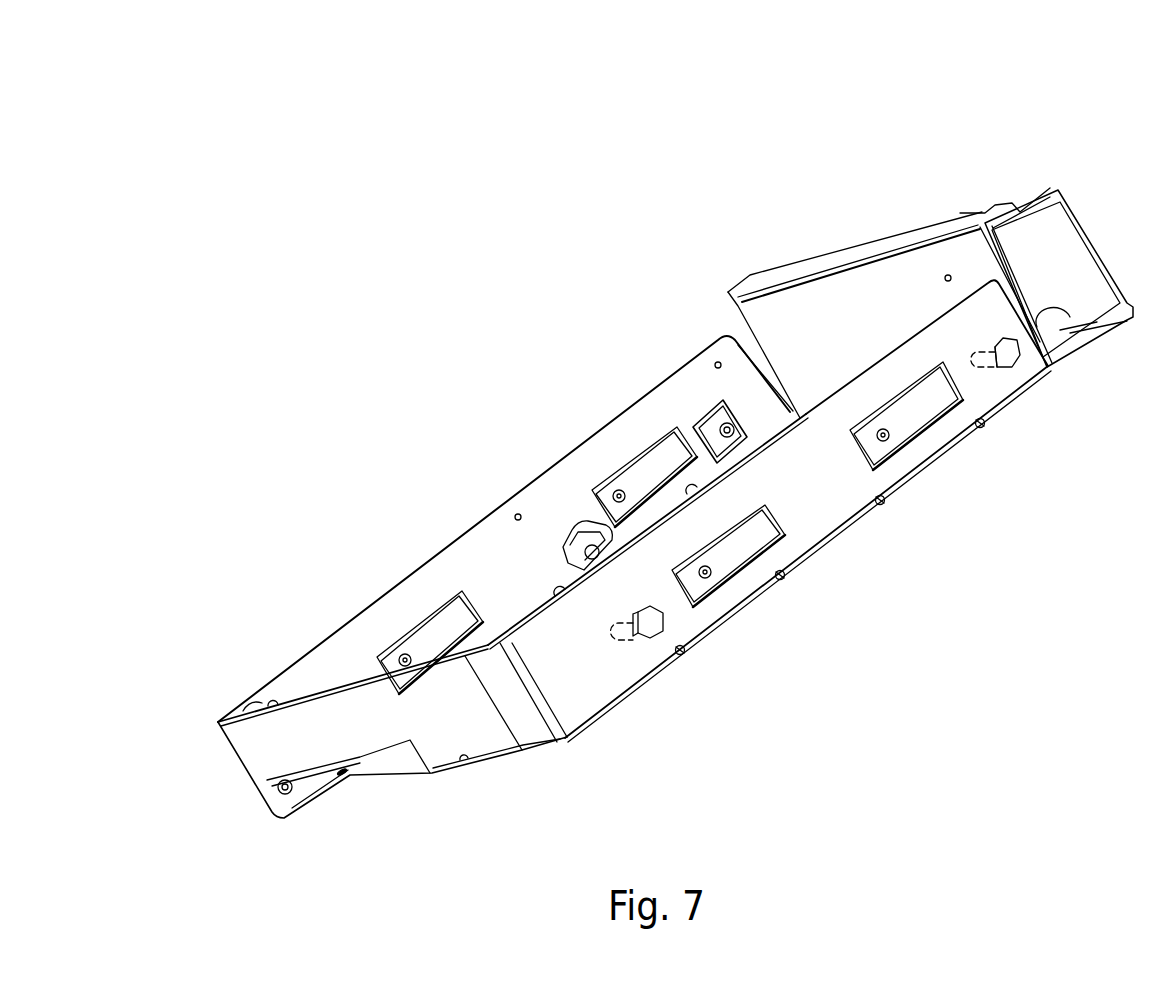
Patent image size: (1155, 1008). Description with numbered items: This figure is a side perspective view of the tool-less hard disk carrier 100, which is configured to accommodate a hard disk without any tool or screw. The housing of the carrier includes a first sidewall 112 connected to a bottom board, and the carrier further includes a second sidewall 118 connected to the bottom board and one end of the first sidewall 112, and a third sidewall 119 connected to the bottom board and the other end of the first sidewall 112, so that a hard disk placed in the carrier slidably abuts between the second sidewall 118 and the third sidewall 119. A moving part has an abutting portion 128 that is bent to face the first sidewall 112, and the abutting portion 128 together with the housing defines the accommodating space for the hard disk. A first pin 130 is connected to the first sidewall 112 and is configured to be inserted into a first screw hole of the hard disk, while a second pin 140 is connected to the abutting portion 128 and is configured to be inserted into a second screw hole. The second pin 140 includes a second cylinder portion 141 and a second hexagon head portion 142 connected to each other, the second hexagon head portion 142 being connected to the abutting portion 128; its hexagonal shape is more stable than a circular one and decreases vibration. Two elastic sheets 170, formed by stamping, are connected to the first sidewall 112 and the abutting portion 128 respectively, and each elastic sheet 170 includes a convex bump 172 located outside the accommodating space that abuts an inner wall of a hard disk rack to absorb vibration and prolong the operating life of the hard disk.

The tool-less hard disk carrier 100 is at (236, 72).
The first sidewall 112 is at (468, 524).
The second sidewall 118 is at (867, 292).
The third sidewall 119 is at (375, 713).
The abutting portion 128 is at (805, 487).
The first pin 130 is at (717, 430).
The second pin 140 is at (955, 652).
The second cylinder portion 141 is at (623, 630).
The second hexagon head portion 142 is at (653, 622).
The elastic sheet 170 is at (432, 643).
The convex bump 172 is at (917, 413).